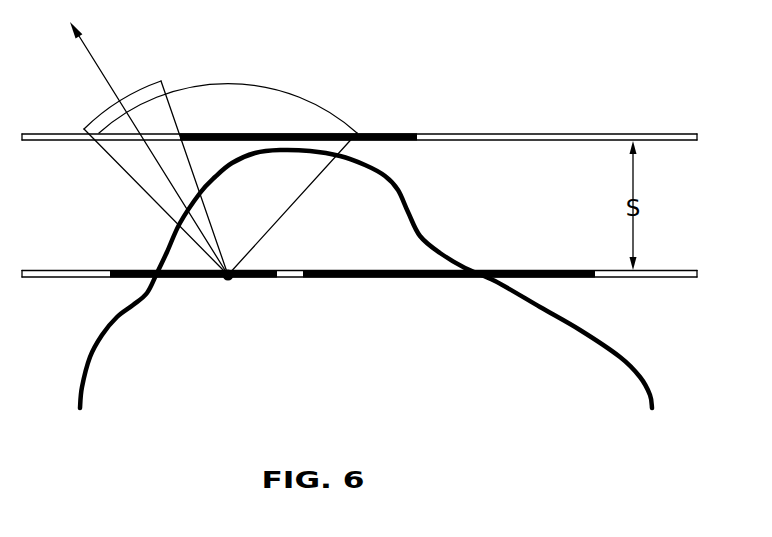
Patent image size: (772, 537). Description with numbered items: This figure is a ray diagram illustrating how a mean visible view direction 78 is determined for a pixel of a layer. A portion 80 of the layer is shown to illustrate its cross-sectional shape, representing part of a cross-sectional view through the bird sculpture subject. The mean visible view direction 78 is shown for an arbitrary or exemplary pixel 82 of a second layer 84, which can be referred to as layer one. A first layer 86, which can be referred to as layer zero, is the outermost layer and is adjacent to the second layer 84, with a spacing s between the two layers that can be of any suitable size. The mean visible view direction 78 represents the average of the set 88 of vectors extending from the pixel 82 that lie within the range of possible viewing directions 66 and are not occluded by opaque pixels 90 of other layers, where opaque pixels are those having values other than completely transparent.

The range of possible viewing directions 66 is at (238, 88).
The mean visible view direction 78 is at (93, 60).
The portion of the layer 80 is at (82, 368).
The pixel 82 is at (224, 282).
The second layer 84 is at (62, 253).
The first layer 86 is at (523, 120).
The set of vectors 88 is at (140, 91).
The opaque pixels 90 is at (317, 134).